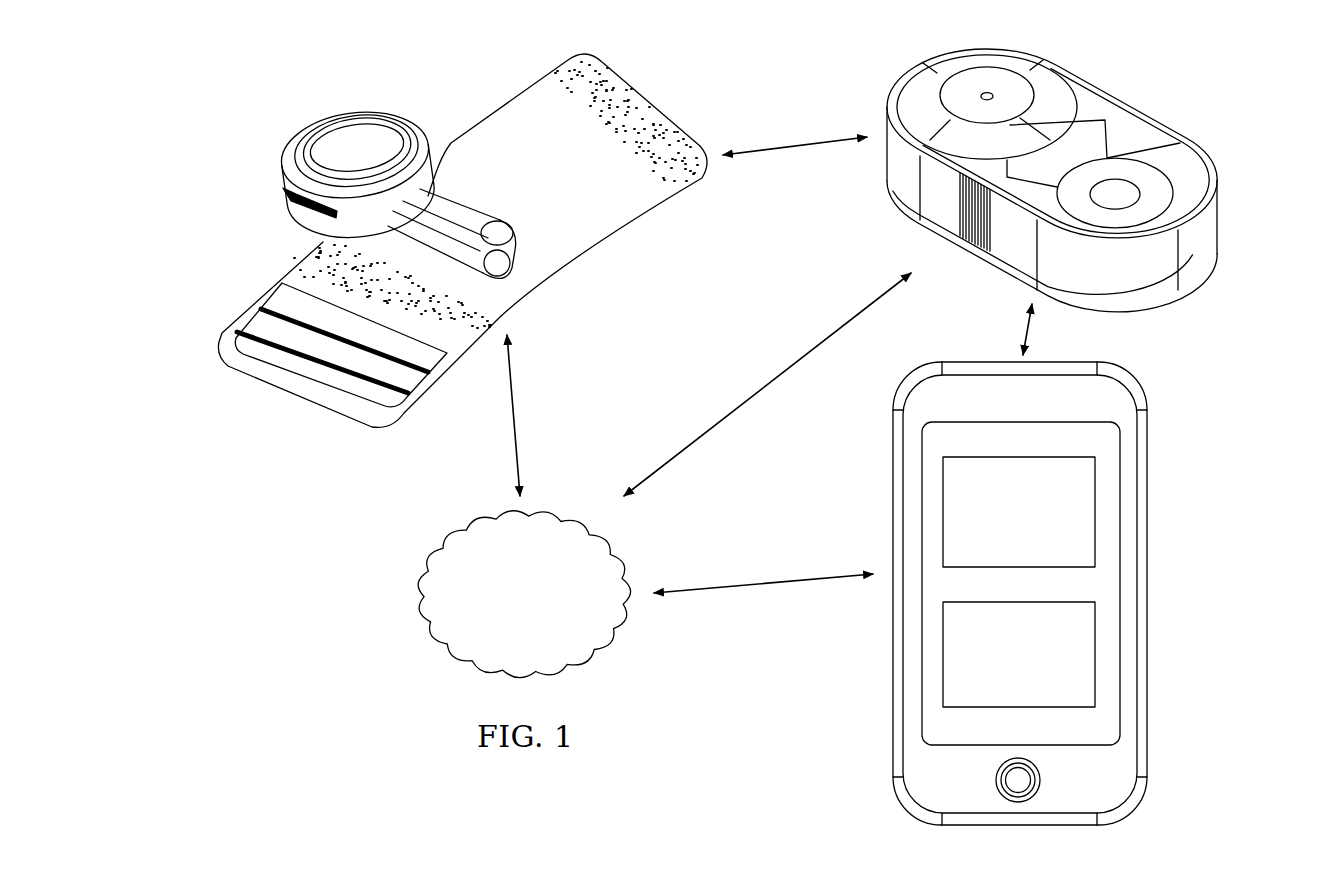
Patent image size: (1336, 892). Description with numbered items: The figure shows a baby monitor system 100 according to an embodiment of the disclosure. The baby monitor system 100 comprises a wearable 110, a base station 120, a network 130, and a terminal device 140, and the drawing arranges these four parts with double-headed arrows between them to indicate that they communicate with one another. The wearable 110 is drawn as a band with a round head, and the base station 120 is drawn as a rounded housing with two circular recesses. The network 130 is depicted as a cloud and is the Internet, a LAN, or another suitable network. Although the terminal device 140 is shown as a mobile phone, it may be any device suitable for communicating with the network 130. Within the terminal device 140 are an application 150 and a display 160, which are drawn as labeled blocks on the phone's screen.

The baby monitor system 100 is at (213, 116).
The wearable 110 is at (476, 119).
The base station 120 is at (1222, 207).
The network 130 is at (543, 623).
The terminal device 140 is at (1149, 596).
The application 150 is at (1002, 539).
The display 160 is at (1037, 683).